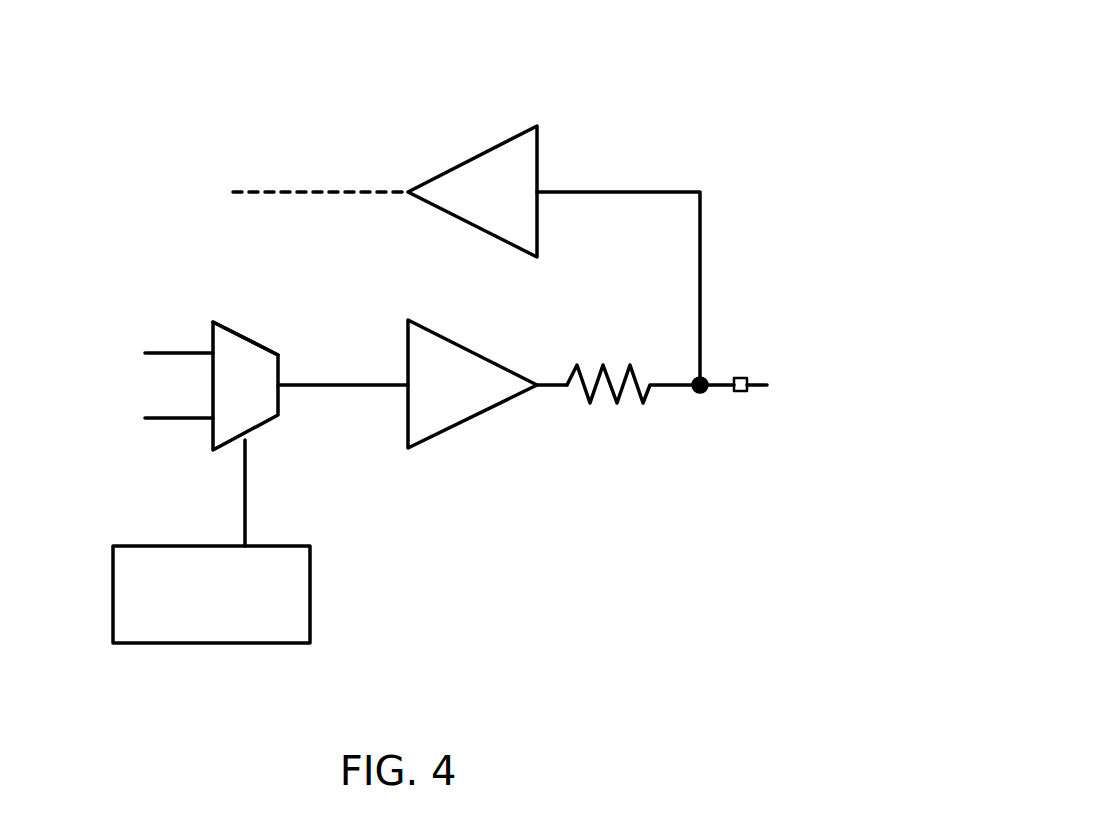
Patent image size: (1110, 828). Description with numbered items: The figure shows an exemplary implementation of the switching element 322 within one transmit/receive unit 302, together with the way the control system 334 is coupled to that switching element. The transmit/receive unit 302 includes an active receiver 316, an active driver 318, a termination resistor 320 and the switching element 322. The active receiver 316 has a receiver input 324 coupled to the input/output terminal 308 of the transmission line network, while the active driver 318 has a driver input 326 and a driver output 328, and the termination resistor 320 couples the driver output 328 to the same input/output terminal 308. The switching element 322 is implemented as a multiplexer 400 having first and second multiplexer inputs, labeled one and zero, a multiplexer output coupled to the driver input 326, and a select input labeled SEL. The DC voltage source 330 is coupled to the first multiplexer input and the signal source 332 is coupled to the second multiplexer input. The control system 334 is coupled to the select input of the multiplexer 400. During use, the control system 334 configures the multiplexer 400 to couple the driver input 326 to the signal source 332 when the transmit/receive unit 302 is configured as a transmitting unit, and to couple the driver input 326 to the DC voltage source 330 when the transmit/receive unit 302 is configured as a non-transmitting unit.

The transmit/receive unit 302 is at (632, 101).
The input/output terminal 308 is at (745, 391).
The active receiver 316 is at (451, 205).
The active driver 318 is at (451, 398).
The termination resistor 320 is at (612, 360).
The switching element 322 is at (230, 327).
The receiver input 324 is at (578, 194).
The driver input 326 is at (365, 388).
The driver output 328 is at (547, 388).
The DC voltage source 330 is at (124, 330).
The signal source 332 is at (124, 445).
The control system 334 is at (202, 645).
The multiplexer 400 is at (257, 338).